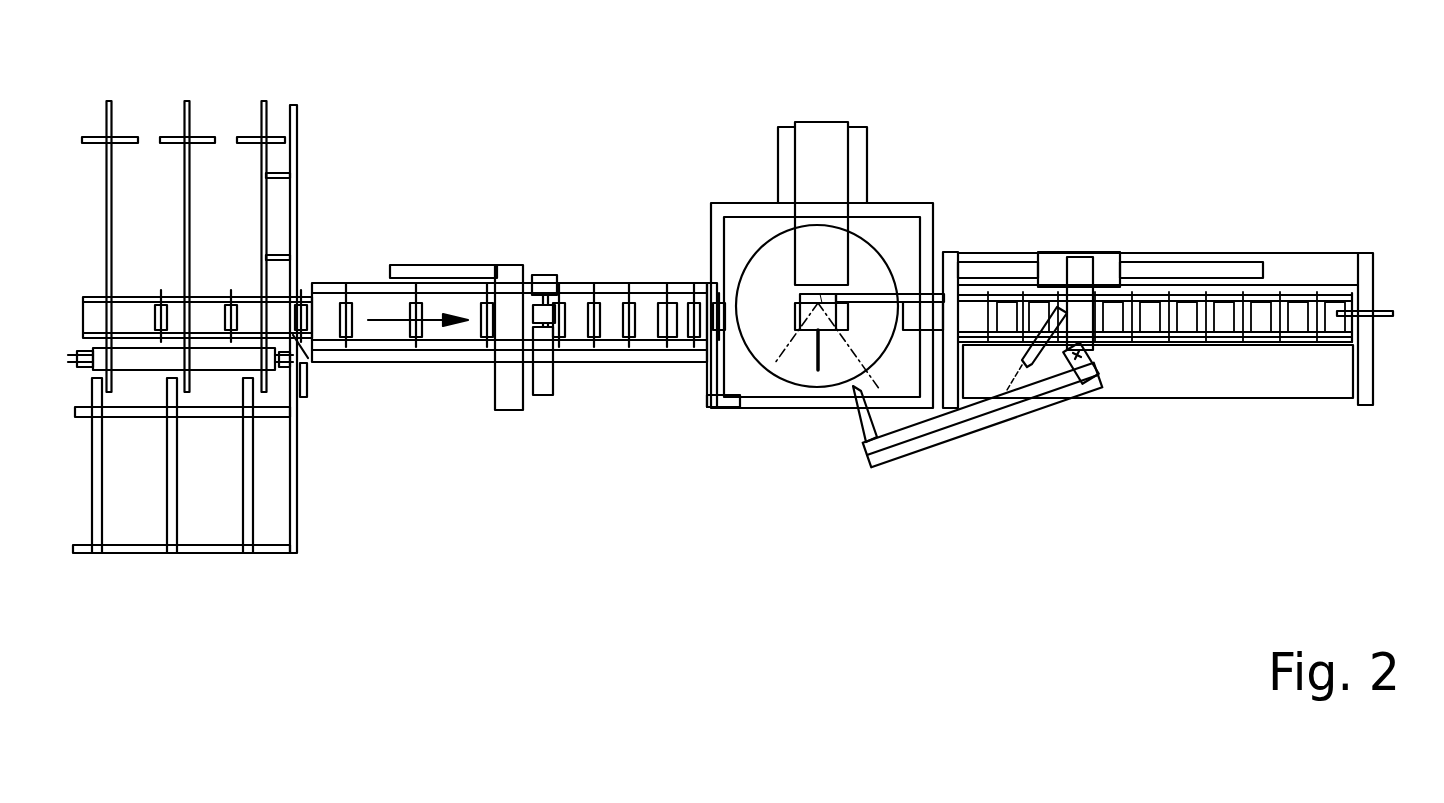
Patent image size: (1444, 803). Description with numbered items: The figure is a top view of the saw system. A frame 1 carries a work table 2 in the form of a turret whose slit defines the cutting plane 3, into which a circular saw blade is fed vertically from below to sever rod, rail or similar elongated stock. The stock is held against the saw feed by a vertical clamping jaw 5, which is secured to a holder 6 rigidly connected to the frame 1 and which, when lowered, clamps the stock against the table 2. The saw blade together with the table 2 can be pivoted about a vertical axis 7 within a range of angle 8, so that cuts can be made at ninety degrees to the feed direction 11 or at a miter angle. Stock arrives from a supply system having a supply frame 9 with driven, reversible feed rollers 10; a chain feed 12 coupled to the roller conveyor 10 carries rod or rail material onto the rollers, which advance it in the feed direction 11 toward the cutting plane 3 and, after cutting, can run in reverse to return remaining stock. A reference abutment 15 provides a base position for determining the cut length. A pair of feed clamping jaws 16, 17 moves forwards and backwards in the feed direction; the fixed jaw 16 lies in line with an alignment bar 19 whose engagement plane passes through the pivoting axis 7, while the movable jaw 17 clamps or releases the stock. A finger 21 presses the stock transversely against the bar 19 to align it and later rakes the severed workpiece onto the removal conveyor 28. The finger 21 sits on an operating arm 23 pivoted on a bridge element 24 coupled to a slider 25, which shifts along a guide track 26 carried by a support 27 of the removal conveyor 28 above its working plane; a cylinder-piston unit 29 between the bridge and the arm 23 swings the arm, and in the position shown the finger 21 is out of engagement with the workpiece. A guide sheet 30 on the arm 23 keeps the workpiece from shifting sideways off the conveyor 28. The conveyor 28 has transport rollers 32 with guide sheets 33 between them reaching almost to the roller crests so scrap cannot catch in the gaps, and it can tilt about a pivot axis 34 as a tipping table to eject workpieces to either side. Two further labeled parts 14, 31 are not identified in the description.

The frame 1 is at (763, 407).
The work table 2 is at (788, 347).
The cutting plane 3 is at (827, 360).
The vertical clamping jaw 5 is at (818, 300).
The holder 6 is at (818, 197).
The vertical axis 7 is at (822, 301).
The range of angle 8 is at (763, 325).
The supply frame 9 is at (364, 360).
The feed rollers 10 is at (420, 327).
The feed direction arrow 11 is at (382, 320).
The chain feed 12 is at (192, 152).
The pallet conveyor section 14 is at (660, 302).
The reference abutment 15 is at (668, 323).
The fixed feed clamping jaw 16 is at (541, 283).
The movable feed clamping jaw 17 is at (542, 383).
The alignment bar 19 is at (897, 290).
The finger 21 is at (860, 418).
The operating arm 23 is at (1024, 398).
The bridge element 24 is at (1078, 332).
The slider 25 is at (1104, 265).
The guide track 26 is at (1186, 273).
The support 27 is at (1367, 383).
The removal conveyor 28 is at (1227, 343).
The cylinder-piston unit 29 is at (1048, 394).
The guide sheet 30 is at (932, 437).
The discharge conveyor 31 is at (939, 293).
The transport rollers 32 is at (1278, 310).
The guide sheets 33 is at (1303, 307).
The pivot axis 34 is at (1379, 308).